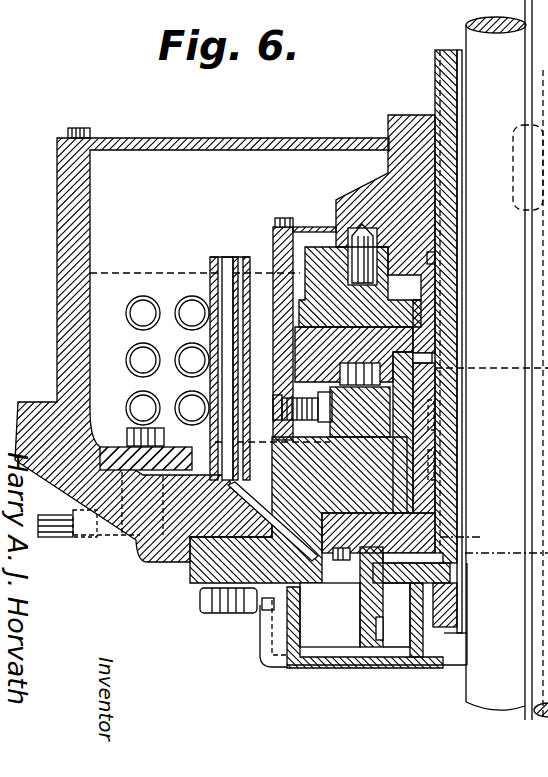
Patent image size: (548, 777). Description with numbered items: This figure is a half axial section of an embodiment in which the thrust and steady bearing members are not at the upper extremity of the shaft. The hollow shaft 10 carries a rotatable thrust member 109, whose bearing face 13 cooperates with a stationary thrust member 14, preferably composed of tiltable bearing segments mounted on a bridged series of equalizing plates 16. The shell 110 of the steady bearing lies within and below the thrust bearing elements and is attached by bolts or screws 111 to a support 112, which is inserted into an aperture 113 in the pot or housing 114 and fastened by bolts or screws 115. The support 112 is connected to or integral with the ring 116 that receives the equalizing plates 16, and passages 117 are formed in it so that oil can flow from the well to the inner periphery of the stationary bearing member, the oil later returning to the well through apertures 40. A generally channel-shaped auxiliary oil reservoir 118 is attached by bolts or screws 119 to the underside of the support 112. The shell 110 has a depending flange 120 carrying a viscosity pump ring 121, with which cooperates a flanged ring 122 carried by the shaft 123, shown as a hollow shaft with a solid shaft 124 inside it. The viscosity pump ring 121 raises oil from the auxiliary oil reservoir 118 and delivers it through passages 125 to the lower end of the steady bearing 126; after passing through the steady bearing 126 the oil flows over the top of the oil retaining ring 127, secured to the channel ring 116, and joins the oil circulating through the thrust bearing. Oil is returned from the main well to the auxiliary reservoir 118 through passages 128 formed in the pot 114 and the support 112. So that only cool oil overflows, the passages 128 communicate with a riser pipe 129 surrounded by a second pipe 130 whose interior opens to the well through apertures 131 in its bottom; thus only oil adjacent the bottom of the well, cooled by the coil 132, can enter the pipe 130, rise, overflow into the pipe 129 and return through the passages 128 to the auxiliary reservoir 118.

The hollow shaft 10 is at (460, 338).
The bearing face 13 is at (395, 325).
The stationary thrust member 14 is at (375, 345).
The equalizing plates 16 is at (300, 420).
The apertures 40 is at (298, 246).
The rotatable thrust member 109 is at (425, 165).
The shell 110 is at (330, 615).
The bolts or screws 111 is at (338, 562).
The support 112 is at (230, 540).
The aperture 113 is at (81, 531).
The pot or housing 114 is at (62, 440).
The bolts or screws 115 is at (205, 606).
The ring 116 is at (270, 392).
The passages 117 is at (205, 440).
The auxiliary oil reservoir 118 is at (297, 667).
The bolts or screws 119 is at (266, 610).
The depending flange 120 is at (345, 660).
The viscosity pump ring 121 is at (380, 640).
The flanged ring 122 is at (395, 648).
The shaft 123 is at (440, 630).
The solid shaft 124 is at (472, 706).
The passages 125 is at (455, 530).
The steady bearing 126 is at (445, 418).
The oil retaining ring 127 is at (440, 260).
The passages 128 is at (232, 565).
The riser pipe 129 is at (212, 276).
The second pipe 130 is at (230, 260).
The apertures 131 is at (210, 458).
The coil 132 is at (132, 358).